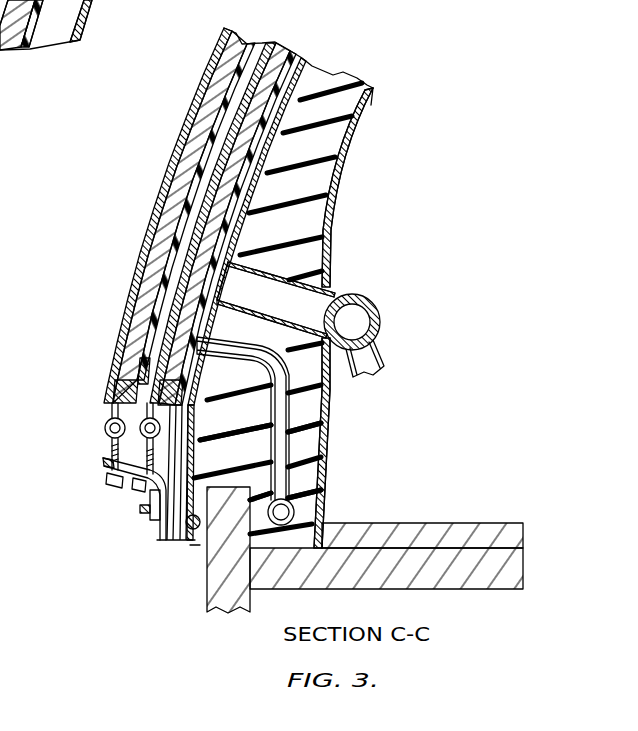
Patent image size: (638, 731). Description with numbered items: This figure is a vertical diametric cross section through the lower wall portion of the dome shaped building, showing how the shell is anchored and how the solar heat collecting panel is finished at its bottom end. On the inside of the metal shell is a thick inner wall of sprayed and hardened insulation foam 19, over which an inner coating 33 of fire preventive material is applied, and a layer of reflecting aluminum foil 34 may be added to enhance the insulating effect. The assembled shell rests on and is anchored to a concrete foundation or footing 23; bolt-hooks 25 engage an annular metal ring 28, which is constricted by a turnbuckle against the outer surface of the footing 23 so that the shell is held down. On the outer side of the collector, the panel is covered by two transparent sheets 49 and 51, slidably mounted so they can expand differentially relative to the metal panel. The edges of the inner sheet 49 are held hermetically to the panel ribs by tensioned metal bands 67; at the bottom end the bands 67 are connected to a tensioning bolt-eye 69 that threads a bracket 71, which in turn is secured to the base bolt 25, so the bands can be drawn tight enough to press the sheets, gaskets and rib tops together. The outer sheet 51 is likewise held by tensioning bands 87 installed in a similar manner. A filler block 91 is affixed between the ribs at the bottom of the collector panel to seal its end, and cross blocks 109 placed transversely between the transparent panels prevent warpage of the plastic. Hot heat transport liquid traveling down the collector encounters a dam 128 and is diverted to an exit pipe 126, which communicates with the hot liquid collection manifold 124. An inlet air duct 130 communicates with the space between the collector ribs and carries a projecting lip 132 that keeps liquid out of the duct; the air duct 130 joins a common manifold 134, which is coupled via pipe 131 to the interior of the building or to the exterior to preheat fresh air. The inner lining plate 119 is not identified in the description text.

The insulation 19 is at (331, 186).
The foundation 23 is at (207, 590).
The bolt-hook 25 is at (194, 530).
The annular metal ring 28 is at (170, 541).
The inner coating 33 is at (368, 86).
The aluminum foil 34 is at (373, 133).
The transparent sheet 49 is at (290, 44).
The transparent sheet 51 is at (240, 31).
The tensioning bands 67 is at (140, 412).
The tensioning bolt-eye 69 is at (103, 459).
The bracket 71 is at (146, 498).
The tensioning bands 87 is at (108, 380).
The filler block 91 is at (148, 318).
The cross blocks 109 is at (196, 150).
The inner lining plate 119 is at (303, 58).
The hot heat transport liquid collection manifold 124 is at (322, 501).
The exit pipe 126 is at (322, 427).
The dam 128 is at (197, 336).
The inlet air duct 130 is at (338, 292).
The pipe 131 is at (383, 359).
The projecting lip 132 is at (230, 268).
The common manifold 134 is at (378, 311).